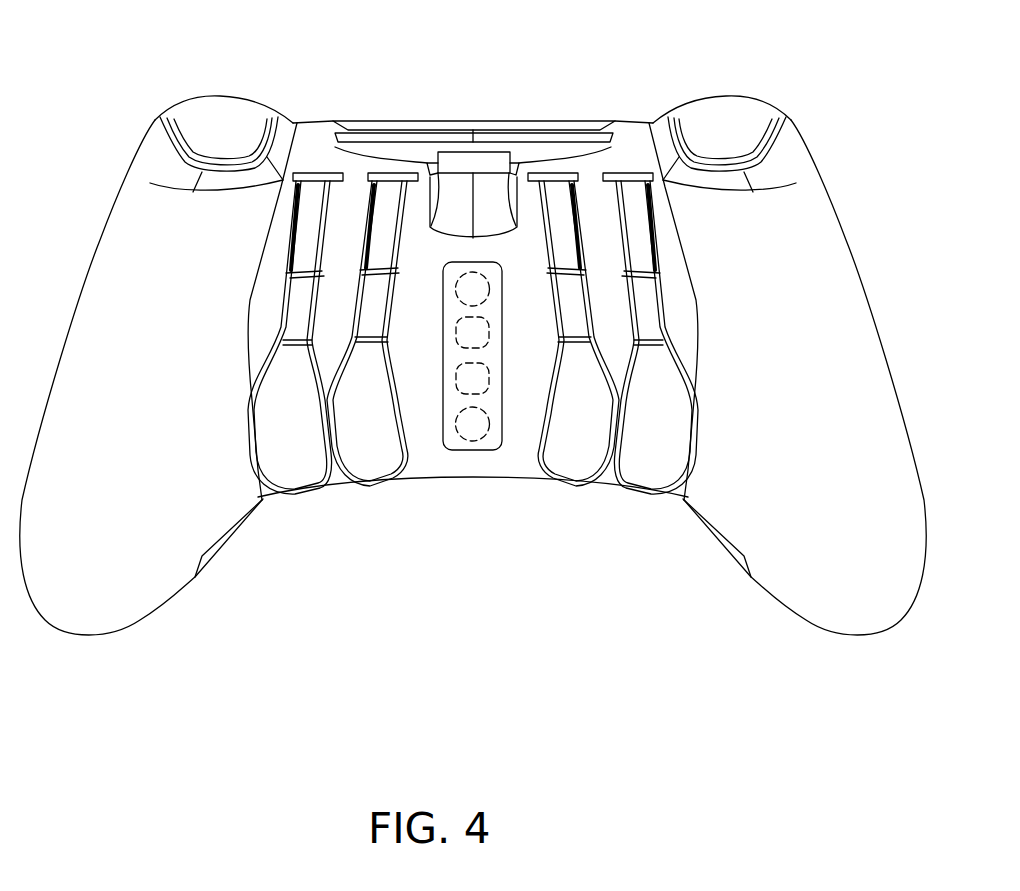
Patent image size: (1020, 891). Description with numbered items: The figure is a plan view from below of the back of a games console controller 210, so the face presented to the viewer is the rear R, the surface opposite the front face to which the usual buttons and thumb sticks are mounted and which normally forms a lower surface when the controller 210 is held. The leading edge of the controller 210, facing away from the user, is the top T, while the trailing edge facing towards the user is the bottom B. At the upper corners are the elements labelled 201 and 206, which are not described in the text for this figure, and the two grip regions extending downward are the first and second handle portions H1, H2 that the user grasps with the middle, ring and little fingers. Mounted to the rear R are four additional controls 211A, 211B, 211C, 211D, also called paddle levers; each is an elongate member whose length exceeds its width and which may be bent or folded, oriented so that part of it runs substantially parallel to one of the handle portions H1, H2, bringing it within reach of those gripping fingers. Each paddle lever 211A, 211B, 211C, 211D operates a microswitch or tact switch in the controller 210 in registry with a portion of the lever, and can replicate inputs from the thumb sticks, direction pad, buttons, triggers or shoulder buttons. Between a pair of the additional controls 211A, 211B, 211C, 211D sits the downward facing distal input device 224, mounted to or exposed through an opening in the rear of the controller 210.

The controller 210 is at (539, 92).
The top T is at (313, 122).
The left bumper 201 is at (246, 139).
The right bumper 206 is at (743, 139).
The first handle portion H1 is at (155, 491).
The second handle portion H2 is at (823, 491).
The bottom B is at (517, 486).
The additional control 211A is at (270, 412).
The additional control 211B is at (377, 458).
The additional control 211C is at (573, 458).
The additional control 211D is at (678, 412).
The rear R is at (426, 367).
The distal input device 224 is at (481, 442).